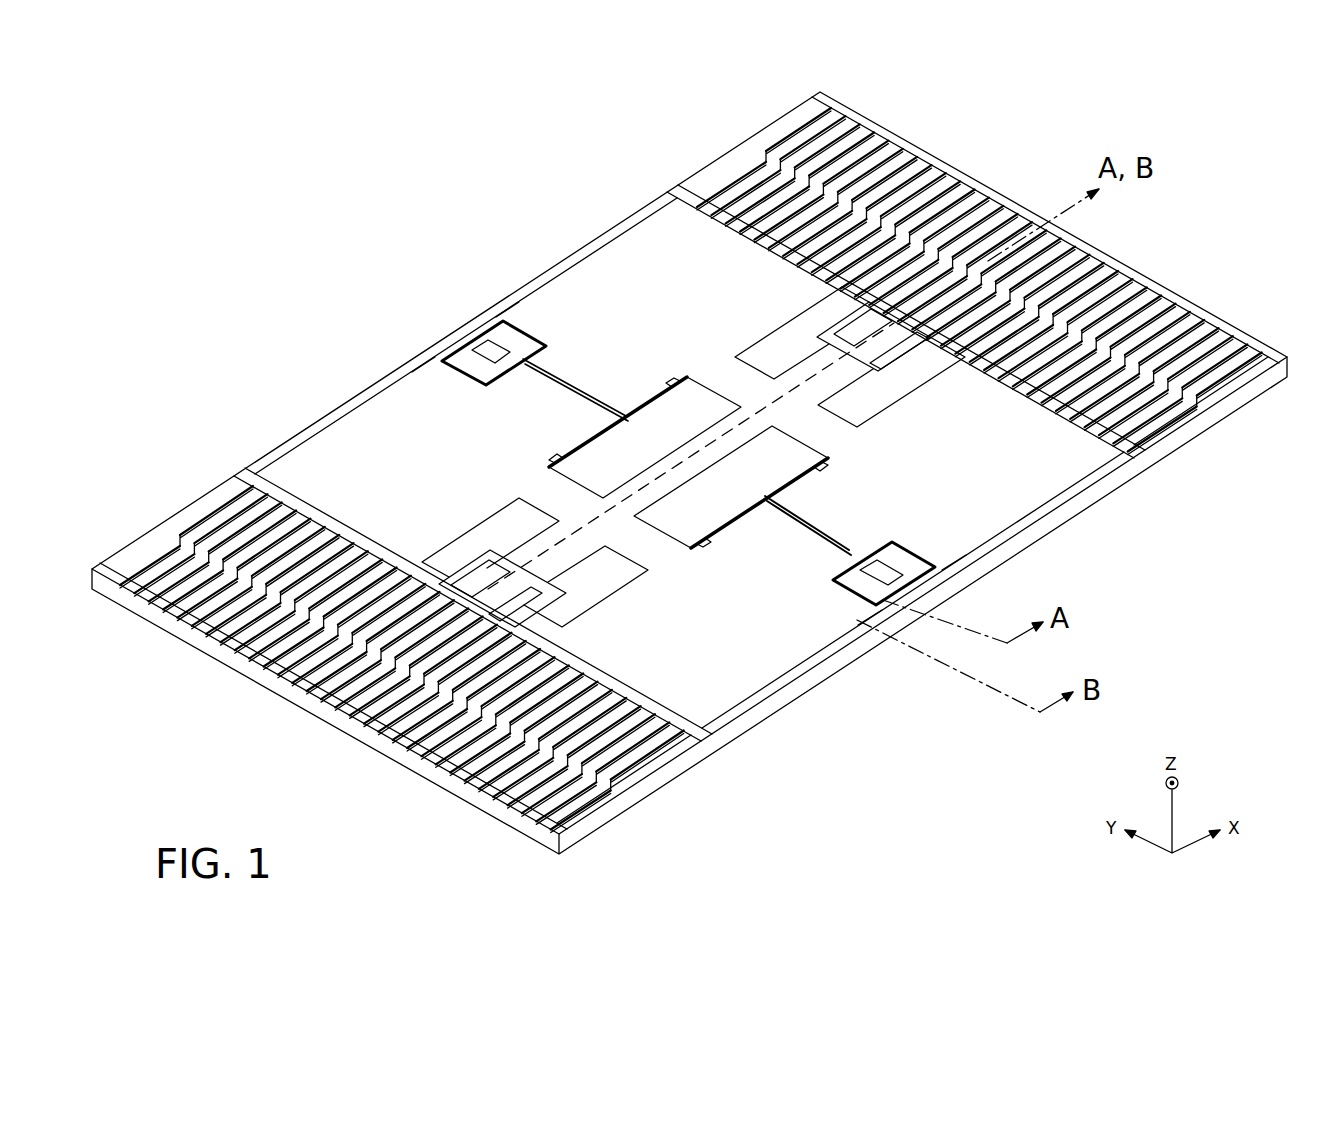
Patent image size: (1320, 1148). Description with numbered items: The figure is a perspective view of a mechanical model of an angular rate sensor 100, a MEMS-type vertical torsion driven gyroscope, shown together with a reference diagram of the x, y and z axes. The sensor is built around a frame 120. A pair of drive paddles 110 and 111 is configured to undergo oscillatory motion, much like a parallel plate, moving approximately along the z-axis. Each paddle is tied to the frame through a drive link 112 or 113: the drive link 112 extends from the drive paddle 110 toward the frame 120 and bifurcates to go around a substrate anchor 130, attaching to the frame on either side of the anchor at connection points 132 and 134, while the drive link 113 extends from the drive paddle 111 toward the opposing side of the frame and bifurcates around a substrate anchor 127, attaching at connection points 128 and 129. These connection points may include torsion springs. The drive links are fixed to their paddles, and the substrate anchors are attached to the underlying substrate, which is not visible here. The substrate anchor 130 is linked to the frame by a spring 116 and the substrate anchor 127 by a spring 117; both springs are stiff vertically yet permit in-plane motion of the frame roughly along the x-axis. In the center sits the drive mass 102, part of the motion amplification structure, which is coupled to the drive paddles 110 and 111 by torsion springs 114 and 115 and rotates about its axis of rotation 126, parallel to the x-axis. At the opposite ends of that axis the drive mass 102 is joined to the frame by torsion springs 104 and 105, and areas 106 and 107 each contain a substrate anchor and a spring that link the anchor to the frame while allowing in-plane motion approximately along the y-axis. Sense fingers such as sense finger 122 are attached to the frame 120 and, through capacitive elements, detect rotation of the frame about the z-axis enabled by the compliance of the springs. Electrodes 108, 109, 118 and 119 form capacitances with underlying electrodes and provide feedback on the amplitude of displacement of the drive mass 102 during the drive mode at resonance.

The angular rate sensor 100 is at (415, 185).
The drive mass 102 is at (1005, 472).
The torsion spring 104 is at (836, 363).
The torsion spring 105 is at (540, 560).
The area with substrate anchor and spring 106 is at (905, 347).
The area with substrate anchor and spring 107 is at (527, 596).
The electrode 108 is at (868, 405).
The electrode 109 is at (800, 322).
The drive paddle 110 is at (835, 452).
The drive paddle 111 is at (684, 375).
The drive link 112 is at (812, 534).
The drive link 113 is at (555, 400).
The torsion spring 114 is at (798, 486).
The torsion spring 115 is at (626, 410).
The spring 116 is at (897, 557).
The spring 117 is at (515, 345).
The electrode 118 is at (610, 573).
The electrode 119 is at (478, 530).
The frame 120 is at (797, 690).
The sense finger 122 is at (957, 187).
The axis of rotation 126 is at (772, 402).
The substrate anchor 127 is at (485, 345).
The connection point 128 is at (423, 360).
The connection point 129 is at (503, 307).
The substrate anchor 130 is at (862, 578).
The connection point 132 is at (868, 615).
The connection point 134 is at (957, 563).